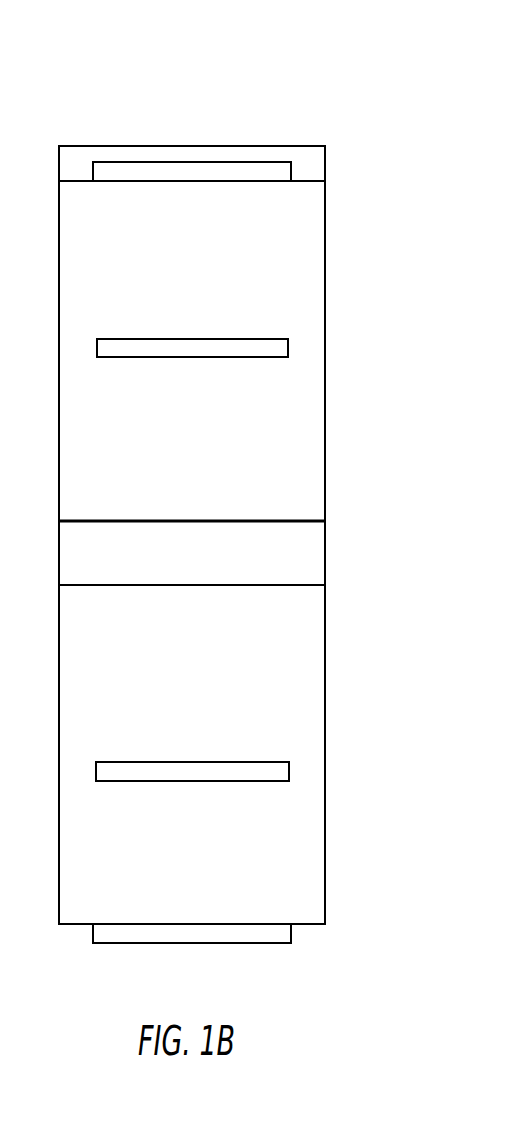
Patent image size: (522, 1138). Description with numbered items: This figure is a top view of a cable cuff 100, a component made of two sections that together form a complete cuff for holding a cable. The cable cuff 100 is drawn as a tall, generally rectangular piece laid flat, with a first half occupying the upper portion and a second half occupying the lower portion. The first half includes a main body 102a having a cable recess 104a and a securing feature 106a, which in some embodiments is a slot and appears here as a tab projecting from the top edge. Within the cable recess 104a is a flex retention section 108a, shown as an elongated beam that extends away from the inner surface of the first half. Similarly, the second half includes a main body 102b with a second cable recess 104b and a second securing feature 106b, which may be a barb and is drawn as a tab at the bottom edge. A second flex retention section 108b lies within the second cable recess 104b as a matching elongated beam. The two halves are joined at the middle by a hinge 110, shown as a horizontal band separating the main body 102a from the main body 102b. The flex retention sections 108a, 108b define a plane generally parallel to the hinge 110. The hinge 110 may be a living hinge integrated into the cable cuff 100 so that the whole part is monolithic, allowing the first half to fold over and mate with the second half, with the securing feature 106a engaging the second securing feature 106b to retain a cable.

The cable cuff 100 is at (290, 80).
The main body 102a is at (217, 243).
The main body 102b is at (215, 645).
The cable recess 104a is at (286, 258).
The second cable recess 104b is at (286, 703).
The securing feature 106a is at (163, 170).
The second securing feature 106b is at (208, 932).
The flex retention section 108a is at (201, 348).
The second flex retention section 108b is at (201, 772).
The hinge 110 is at (303, 553).